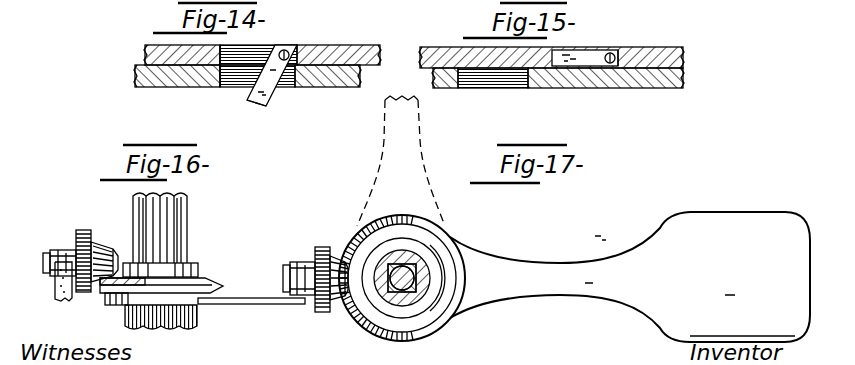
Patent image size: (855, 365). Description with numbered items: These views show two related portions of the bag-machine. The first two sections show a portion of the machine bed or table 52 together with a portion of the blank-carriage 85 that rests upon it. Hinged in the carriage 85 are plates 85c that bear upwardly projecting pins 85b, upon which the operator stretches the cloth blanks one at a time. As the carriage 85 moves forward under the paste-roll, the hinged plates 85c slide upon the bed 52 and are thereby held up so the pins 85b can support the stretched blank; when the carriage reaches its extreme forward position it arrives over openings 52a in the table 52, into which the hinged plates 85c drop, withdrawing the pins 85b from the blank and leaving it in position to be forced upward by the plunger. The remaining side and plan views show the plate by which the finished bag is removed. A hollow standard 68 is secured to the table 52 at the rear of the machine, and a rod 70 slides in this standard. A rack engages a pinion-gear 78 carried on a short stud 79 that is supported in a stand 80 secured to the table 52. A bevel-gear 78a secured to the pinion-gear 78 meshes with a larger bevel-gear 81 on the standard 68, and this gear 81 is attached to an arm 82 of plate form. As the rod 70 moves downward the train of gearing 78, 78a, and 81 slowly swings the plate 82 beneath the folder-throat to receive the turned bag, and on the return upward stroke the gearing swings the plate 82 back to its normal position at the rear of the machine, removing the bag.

In FIG. 14, the table 52 is at (175, 84).
In FIG. 15, the table 52 is at (668, 88).
In FIG. 14, the openings in table 52a is at (236, 72).
In FIG. 15, the openings in table 52a is at (512, 76).
In FIG. 14, the carriage 85 is at (325, 49).
In FIG. 15, the carriage 85 is at (668, 60).
In FIG. 14, the pins 85b is at (248, 87).
In FIG. 15, the pins 85b is at (565, 48).
In FIG. 14, the hinged plates 85c is at (264, 105).
In FIG. 15, the hinged plates 85c is at (592, 57).
In FIG. 16, the hollow standard 68 is at (162, 236).
In FIG. 17, the hollow standard 68 is at (408, 268).
In FIG. 17, the rod 70 is at (380, 308).
In FIG. 16, the pinion-gear 78 is at (81, 232).
In FIG. 17, the pinion-gear 78 is at (312, 260).
In FIG. 16, the bevel-gear 78a is at (115, 240).
In FIG. 17, the bevel-gear 78a is at (336, 256).
In FIG. 16, the stud 79 is at (44, 262).
In FIG. 17, the stud 79 is at (286, 273).
In FIG. 16, the stand 80 is at (58, 290).
In FIG. 16, the bevel-gear 81 is at (130, 289).
In FIG. 17, the bevel-gear 81 is at (392, 338).
In FIG. 16, the arm 82 is at (263, 305).
In FIG. 17, the arm 82 is at (630, 277).